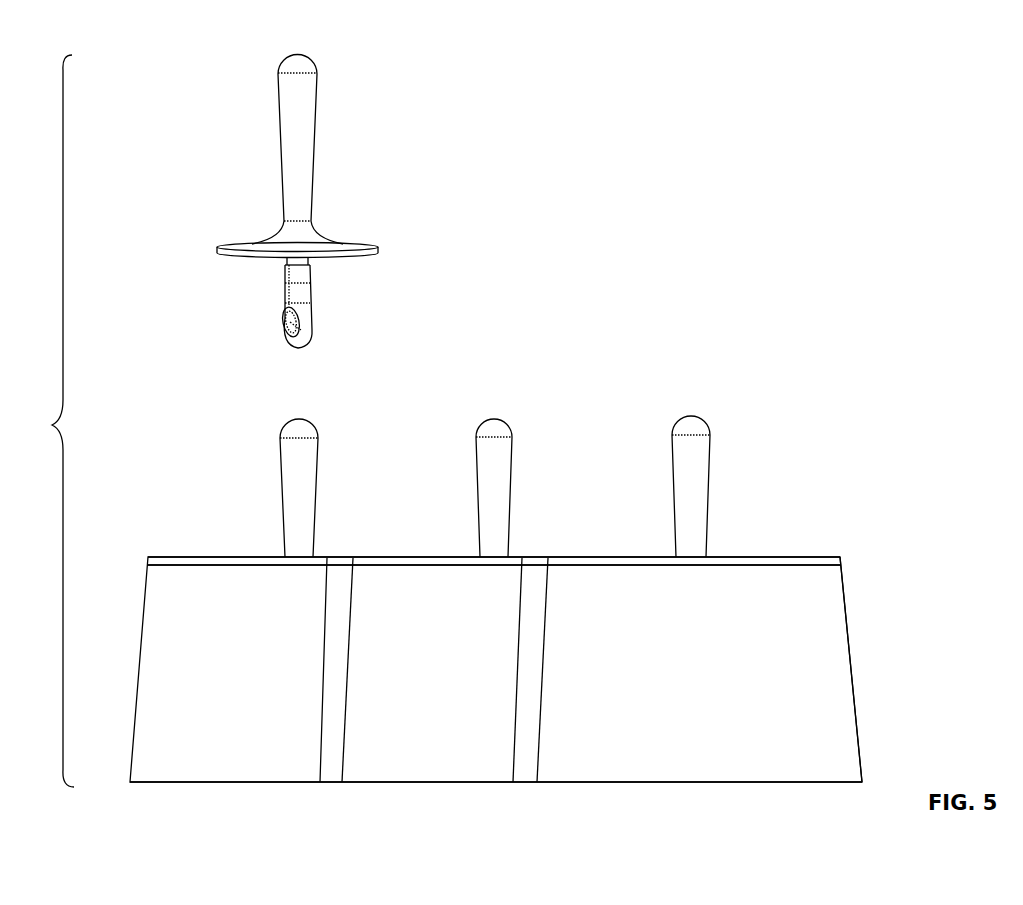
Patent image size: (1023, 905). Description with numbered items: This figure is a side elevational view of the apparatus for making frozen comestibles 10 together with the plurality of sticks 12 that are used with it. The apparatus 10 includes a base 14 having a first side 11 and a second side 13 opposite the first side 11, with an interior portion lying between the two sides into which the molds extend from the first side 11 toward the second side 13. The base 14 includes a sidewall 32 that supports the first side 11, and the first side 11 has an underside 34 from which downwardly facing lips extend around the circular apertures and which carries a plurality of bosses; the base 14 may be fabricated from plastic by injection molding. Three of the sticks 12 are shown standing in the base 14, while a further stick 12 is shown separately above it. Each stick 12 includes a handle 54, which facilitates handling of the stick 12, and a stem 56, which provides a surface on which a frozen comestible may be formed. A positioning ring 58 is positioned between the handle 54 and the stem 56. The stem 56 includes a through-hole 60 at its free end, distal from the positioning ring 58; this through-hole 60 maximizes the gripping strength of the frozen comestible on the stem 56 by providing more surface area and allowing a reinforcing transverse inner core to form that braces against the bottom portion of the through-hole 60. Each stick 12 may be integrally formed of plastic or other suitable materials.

The apparatus for making frozen comestibles 10 is at (886, 476).
The first side 11 is at (820, 557).
The sticks 12 is at (324, 500).
The second side 13 is at (808, 783).
The base 14 is at (898, 711).
The sidewall 32 is at (848, 633).
The underside 34 is at (773, 557).
The handle 54 is at (284, 147).
The stem 56 is at (311, 298).
The positioning ring 58 is at (345, 244).
The through-hole 60 is at (288, 324).